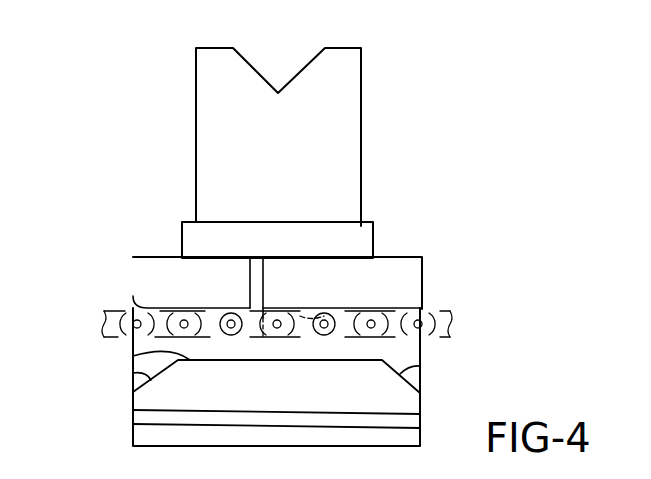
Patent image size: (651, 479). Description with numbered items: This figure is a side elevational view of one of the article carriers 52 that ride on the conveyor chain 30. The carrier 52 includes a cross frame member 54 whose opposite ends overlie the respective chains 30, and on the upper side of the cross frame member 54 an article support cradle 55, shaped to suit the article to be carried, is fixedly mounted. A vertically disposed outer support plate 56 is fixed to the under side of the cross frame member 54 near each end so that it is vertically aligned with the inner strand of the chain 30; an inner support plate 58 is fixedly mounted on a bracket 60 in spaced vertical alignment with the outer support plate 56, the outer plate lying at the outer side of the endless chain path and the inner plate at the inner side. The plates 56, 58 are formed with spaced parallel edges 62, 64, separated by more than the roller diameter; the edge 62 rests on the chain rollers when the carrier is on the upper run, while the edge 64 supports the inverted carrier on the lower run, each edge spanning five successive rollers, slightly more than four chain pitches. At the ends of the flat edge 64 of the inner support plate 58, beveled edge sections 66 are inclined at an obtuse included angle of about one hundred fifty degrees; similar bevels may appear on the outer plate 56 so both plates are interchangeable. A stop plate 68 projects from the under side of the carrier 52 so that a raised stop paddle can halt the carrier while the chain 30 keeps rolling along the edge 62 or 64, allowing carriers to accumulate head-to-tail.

The chain 30 is at (270, 299).
The article carrier 52 is at (428, 160).
The cross frame member 54 is at (360, 240).
The article support cradle 55 is at (258, 172).
The outer support plate 56 is at (302, 296).
The inner support plate 58 is at (274, 408).
The bracket 60 is at (412, 352).
The edge of outer support plate 62 is at (333, 313).
The edge of inner support plate 64 is at (133, 356).
The beveled edge section 66 is at (133, 378).
The stop plate 68 is at (248, 296).